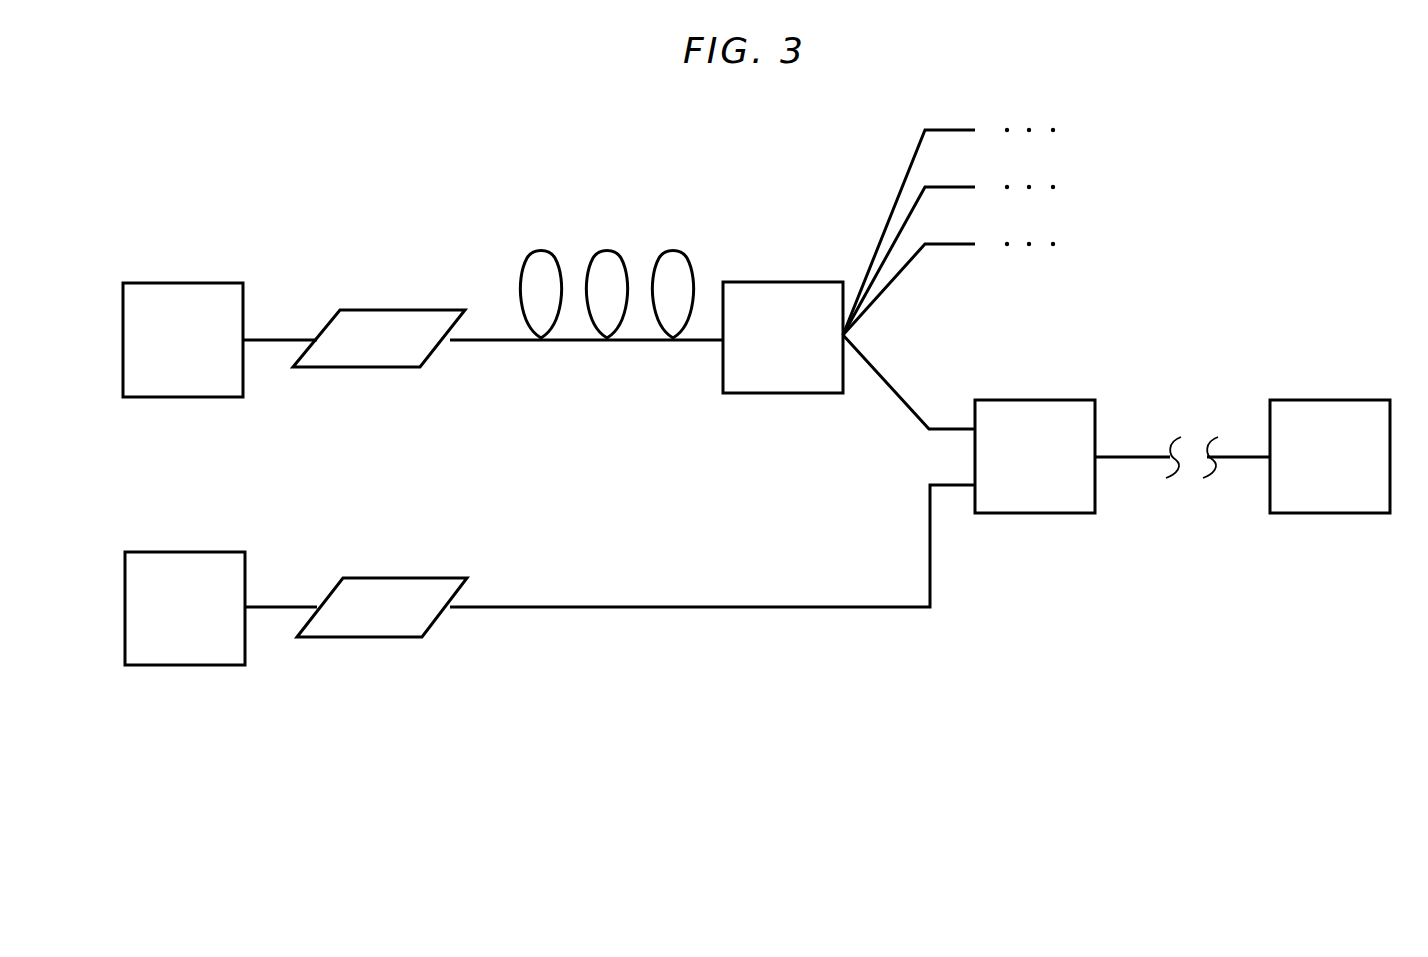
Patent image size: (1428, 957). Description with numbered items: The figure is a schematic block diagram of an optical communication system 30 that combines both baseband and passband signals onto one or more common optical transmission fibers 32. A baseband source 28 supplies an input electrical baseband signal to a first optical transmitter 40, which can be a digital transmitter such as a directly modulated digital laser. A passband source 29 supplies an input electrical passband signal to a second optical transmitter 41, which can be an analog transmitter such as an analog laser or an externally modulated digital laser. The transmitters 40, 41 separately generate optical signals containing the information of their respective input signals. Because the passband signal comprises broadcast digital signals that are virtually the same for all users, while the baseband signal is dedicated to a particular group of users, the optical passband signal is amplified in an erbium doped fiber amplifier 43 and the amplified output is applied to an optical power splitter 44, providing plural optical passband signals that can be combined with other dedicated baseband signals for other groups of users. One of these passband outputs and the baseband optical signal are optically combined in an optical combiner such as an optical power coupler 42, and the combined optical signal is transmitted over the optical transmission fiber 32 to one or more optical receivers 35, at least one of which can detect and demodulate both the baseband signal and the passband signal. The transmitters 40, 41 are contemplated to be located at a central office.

The optical communication system 30 is at (356, 152).
The passband source 29 is at (198, 282).
The second optical transmitter 41 is at (393, 310).
The erbium doped fiber amplifier 43 is at (608, 250).
The optical power splitter 44 is at (798, 280).
The optical power coupler 42 is at (1050, 400).
The optical transmission fiber 32 is at (1145, 453).
The optical receiver 35 is at (1347, 398).
The baseband source 28 is at (200, 550).
The first optical transmitter 40 is at (397, 578).